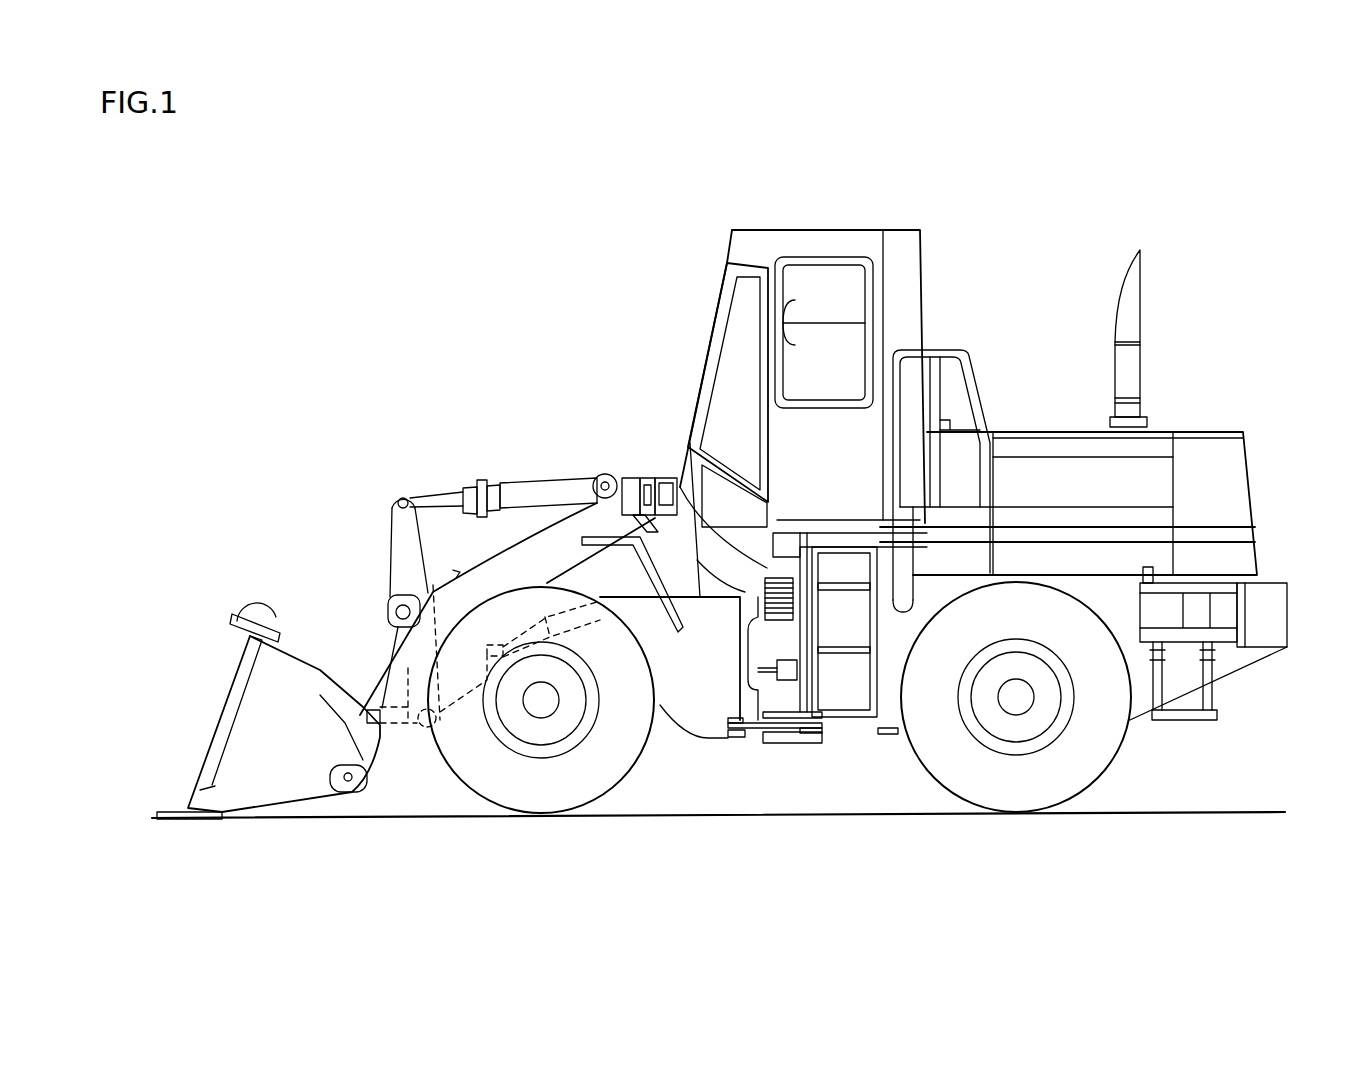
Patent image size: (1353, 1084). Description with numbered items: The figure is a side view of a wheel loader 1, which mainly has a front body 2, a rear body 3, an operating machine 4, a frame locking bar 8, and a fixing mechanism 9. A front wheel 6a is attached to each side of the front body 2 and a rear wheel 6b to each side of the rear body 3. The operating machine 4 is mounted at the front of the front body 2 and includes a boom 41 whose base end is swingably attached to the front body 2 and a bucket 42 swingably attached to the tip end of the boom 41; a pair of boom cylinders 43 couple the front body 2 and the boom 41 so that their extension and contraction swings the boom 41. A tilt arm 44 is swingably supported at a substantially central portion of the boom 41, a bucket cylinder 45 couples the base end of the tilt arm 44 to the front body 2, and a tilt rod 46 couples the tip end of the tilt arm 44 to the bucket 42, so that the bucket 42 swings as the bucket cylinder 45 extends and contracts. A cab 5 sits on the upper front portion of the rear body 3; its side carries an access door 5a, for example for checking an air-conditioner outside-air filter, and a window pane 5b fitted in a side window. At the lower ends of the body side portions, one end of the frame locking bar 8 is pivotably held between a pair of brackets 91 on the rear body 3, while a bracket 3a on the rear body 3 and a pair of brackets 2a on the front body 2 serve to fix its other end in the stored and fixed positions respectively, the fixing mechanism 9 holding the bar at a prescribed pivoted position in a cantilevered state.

The wheel loader 1 is at (954, 185).
The front body 2 is at (703, 707).
The bracket 2a is at (745, 728).
The rear body 3 is at (876, 714).
The bracket 3a is at (890, 735).
The operating machine 4 is at (406, 470).
The cab 5 is at (788, 378).
The access door 5a is at (718, 488).
The window pane 5b is at (735, 338).
The front wheel 6a is at (537, 790).
The rear wheel 6b is at (1018, 793).
The frame locking bar 8 is at (752, 720).
The fixing mechanism 9 is at (786, 804).
The bracket 91 is at (820, 740).
The boom 41 is at (530, 553).
The bucket 42 is at (300, 693).
The boom cylinder 43 is at (612, 590).
The tilt arm 44 is at (403, 550).
The bucket cylinder 45 is at (543, 492).
The tilt rod 46 is at (397, 723).